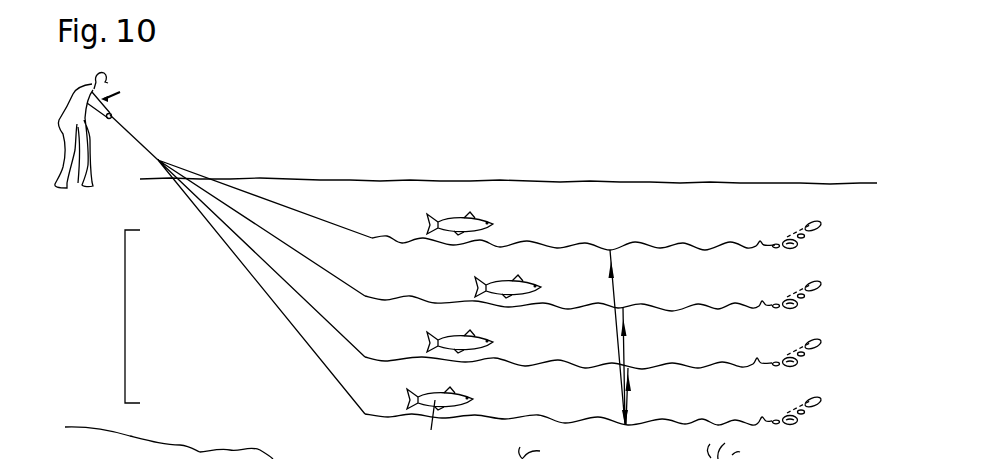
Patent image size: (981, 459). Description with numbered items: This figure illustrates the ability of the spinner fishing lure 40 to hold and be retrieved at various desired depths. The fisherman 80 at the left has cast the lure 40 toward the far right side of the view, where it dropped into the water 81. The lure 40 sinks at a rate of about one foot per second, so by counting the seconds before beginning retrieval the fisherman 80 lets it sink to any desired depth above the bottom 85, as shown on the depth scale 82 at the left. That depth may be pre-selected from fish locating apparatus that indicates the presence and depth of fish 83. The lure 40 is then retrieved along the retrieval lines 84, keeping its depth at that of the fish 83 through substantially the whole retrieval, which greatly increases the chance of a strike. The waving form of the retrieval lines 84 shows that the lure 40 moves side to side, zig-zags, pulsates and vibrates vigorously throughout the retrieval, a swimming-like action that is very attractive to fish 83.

The spinner fishing lure 40 is at (817, 238).
The fisherman 80 is at (58, 123).
The water 81 is at (352, 181).
The depth scale 82 is at (118, 308).
The fish 83 is at (446, 233).
The retrieval lines 84 is at (623, 354).
The bottom 85 is at (184, 444).